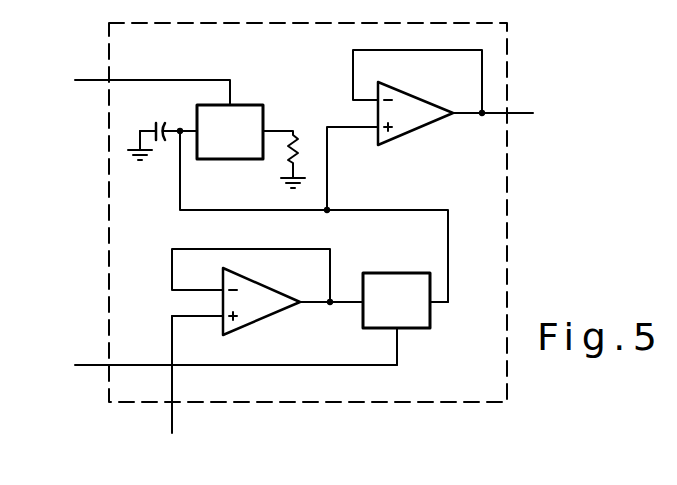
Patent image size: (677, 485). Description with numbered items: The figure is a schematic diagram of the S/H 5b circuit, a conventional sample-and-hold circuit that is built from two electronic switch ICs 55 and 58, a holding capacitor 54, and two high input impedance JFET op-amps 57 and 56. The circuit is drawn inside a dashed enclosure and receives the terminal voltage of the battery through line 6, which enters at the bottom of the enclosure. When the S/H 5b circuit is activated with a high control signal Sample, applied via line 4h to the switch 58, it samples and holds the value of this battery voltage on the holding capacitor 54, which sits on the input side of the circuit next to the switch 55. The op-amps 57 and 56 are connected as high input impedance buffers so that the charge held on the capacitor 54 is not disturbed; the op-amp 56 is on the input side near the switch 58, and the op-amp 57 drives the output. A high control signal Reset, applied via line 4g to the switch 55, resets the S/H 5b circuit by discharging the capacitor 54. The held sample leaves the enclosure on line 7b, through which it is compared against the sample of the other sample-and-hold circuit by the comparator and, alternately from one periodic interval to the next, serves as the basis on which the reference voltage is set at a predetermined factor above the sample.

The S/H circuit 5b is at (213, 23).
The line 4g is at (89, 80).
The line 4h is at (89, 365).
The line 7b is at (516, 113).
The line 6 is at (173, 419).
The holding capacitor 54 is at (168, 117).
The electronic switch IC 55 is at (252, 82).
The high input impedance op-amp 56 is at (265, 319).
The high input impedance op-amp 57 is at (431, 100).
The electronic switch IC 58 is at (400, 346).